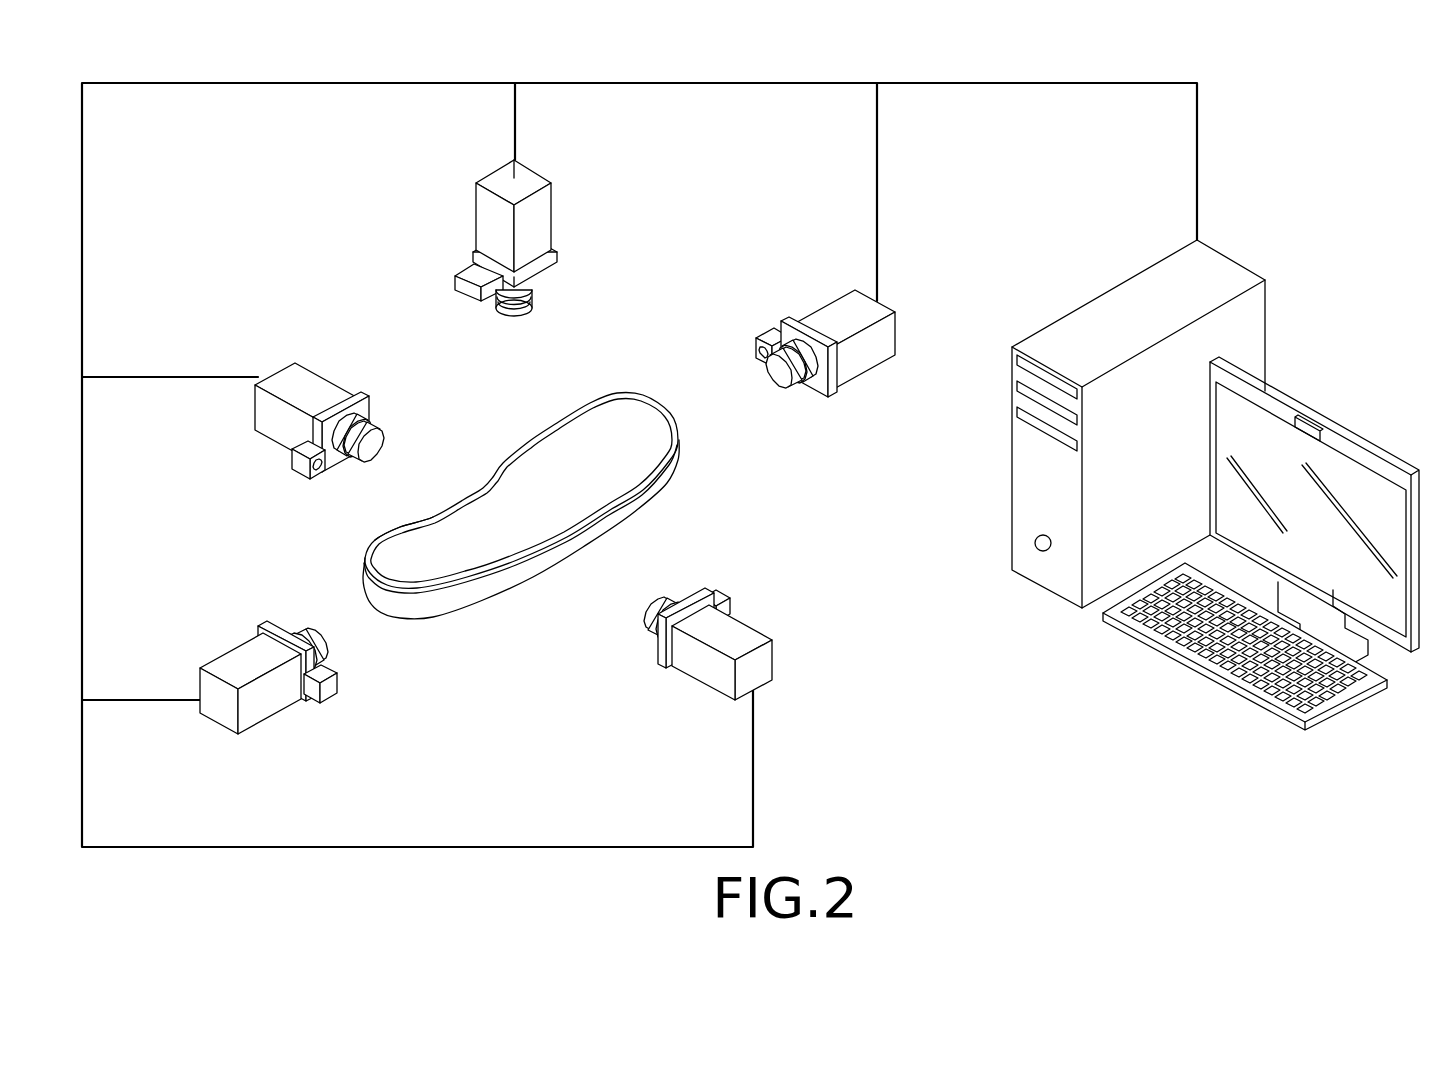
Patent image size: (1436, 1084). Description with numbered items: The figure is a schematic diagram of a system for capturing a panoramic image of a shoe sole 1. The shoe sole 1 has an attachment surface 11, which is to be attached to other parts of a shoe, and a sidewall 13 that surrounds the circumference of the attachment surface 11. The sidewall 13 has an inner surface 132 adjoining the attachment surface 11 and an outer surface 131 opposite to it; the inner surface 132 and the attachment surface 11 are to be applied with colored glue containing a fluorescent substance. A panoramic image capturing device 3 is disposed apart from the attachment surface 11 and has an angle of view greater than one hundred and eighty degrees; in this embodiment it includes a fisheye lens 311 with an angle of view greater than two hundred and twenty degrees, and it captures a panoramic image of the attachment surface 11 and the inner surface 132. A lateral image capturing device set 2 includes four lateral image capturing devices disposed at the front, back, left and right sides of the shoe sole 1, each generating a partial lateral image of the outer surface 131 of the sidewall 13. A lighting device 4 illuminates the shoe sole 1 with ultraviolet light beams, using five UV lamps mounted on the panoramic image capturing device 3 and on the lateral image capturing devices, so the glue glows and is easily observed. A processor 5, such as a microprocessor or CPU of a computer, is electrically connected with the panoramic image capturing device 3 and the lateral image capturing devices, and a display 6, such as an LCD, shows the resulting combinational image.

The shoe sole 1 is at (451, 516).
The attachment surface 11 is at (537, 465).
The sidewall 13 is at (362, 576).
The outer surface 131 is at (509, 571).
The inner surface 132 is at (410, 535).
The lateral image capturing device set 2 is at (265, 383).
The panoramic image capturing device 3 is at (489, 232).
The fisheye lens 311 is at (513, 312).
The lighting device 4 is at (809, 327).
The processor 5 is at (1260, 273).
The display 6 is at (1384, 450).